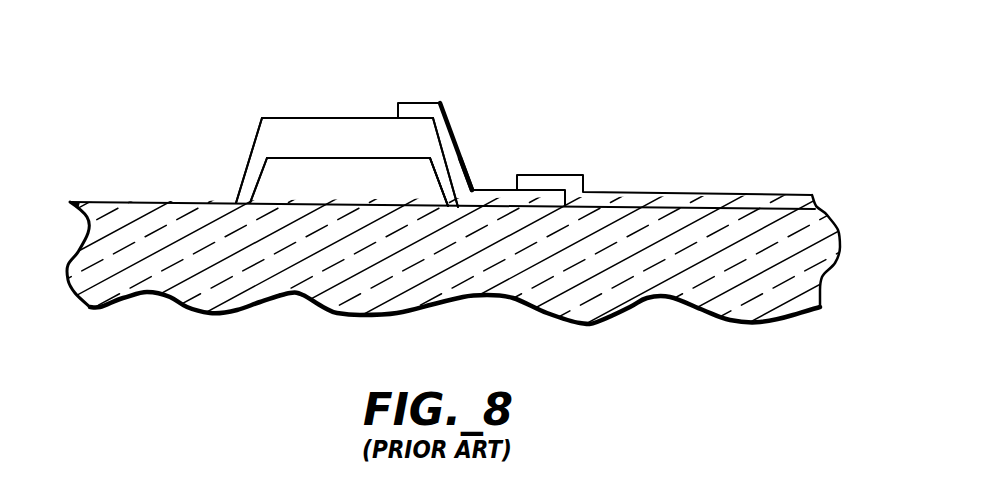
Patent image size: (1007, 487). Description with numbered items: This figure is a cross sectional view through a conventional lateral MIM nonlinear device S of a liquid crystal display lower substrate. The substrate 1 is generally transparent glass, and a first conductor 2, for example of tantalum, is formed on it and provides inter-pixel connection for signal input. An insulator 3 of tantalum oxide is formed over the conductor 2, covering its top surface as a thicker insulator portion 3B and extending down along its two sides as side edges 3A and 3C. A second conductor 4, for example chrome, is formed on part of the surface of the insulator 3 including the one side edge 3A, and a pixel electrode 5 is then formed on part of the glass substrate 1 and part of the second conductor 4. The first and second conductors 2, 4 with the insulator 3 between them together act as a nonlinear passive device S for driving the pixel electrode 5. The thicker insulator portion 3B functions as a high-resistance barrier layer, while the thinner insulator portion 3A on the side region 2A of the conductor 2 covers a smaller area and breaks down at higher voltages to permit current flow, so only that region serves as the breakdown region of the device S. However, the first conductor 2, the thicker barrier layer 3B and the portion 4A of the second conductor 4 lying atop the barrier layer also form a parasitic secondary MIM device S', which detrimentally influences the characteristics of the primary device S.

The substrate 1 is at (723, 297).
The conductor 2 is at (332, 193).
The side region of conductor 2A is at (436, 172).
The insulator 3 is at (252, 122).
The side edge of insulator 3A is at (455, 207).
The top surface insulator portion 3B is at (352, 143).
The side edge of insulator 3C is at (253, 165).
The second conductor 4 is at (449, 131).
The portion of second conductor 4A is at (425, 102).
The pixel electrode 5 is at (755, 198).
The nonlinear MIM device S is at (501, 159).
The secondary MIM device S' is at (424, 61).